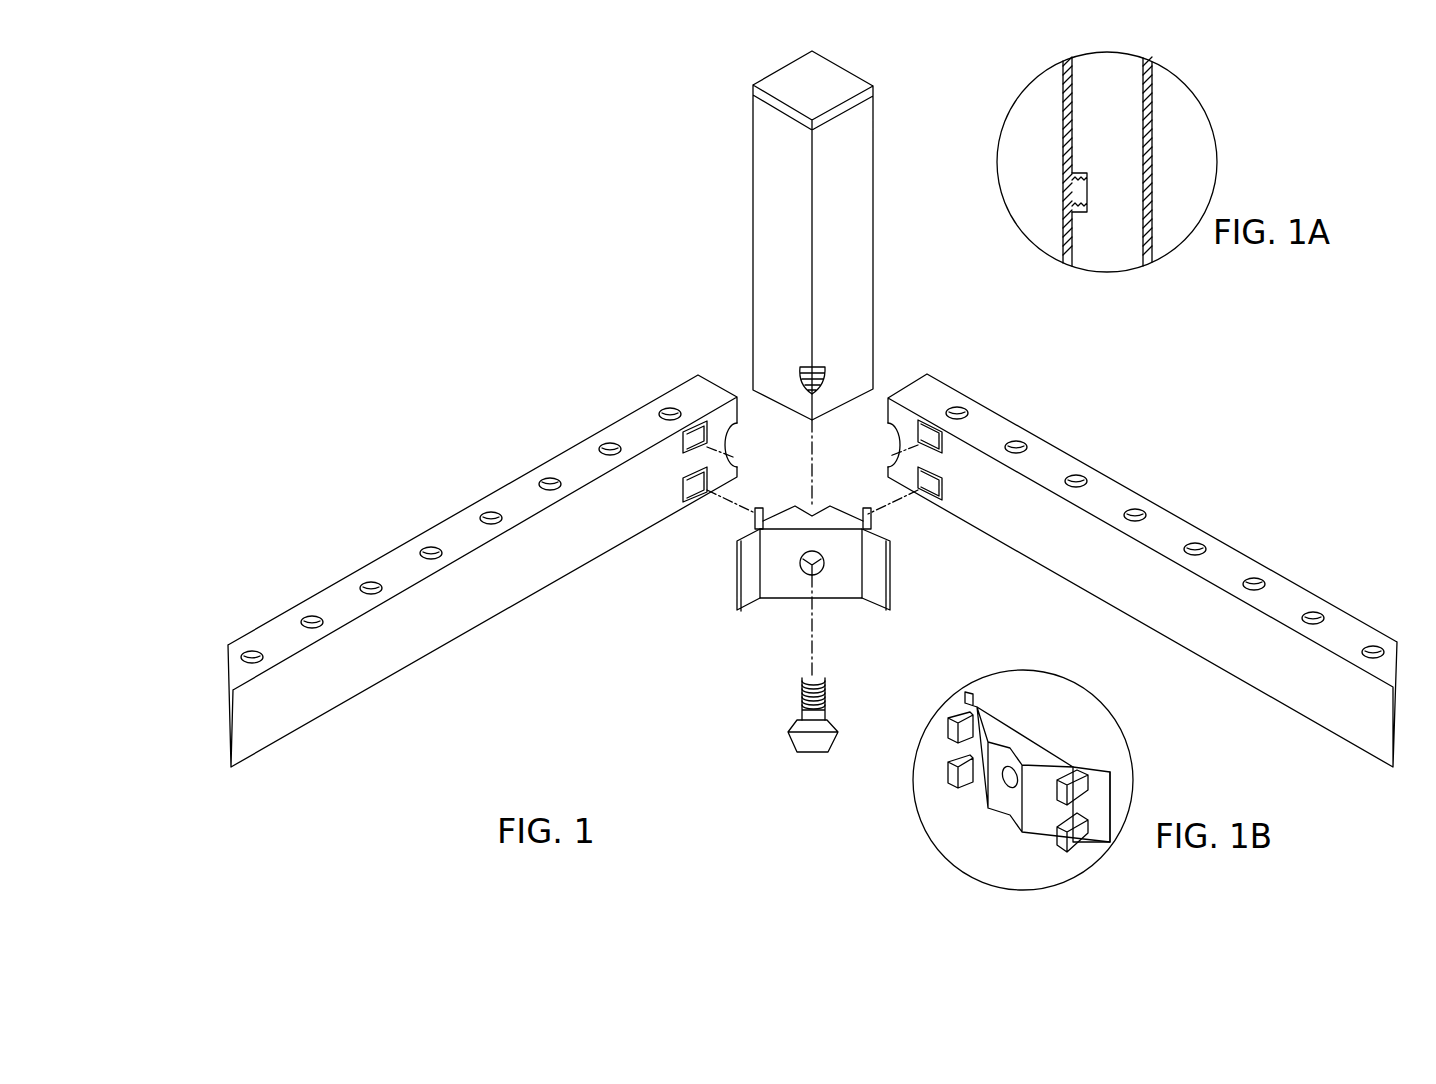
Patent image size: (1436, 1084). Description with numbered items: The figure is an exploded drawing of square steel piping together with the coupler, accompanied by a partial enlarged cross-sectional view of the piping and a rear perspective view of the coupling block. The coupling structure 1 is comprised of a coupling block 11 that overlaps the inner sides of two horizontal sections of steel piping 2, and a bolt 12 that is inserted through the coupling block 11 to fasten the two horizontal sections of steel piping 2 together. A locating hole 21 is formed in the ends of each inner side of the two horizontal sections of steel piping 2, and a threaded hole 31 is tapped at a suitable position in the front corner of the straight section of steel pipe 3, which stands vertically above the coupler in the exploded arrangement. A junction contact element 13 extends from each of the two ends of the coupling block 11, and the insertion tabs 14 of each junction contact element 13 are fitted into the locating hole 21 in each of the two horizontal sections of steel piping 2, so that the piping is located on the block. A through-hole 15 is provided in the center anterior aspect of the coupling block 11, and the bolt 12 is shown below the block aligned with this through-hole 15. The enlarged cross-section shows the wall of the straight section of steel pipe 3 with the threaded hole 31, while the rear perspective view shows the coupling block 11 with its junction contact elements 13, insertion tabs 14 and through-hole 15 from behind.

In FIG. 1, the coupling structure 1 is at (740, 695).
In FIG. 1, the horizontal sections of steel piping 2 is at (458, 528).
In FIG. 1, the straight section of steel pipe 3 is at (779, 223).
In FIG. 1A, the straight section of steel pipe 3 is at (1127, 142).
In FIG. 1, the coupling block 11 is at (783, 587).
In FIG. 1B, the coupling block 11 is at (1027, 762).
In FIG. 1, the bolt 12 is at (808, 740).
In FIG. 1, the junction contact element 13 is at (753, 565).
In FIG. 1B, the junction contact element 13 is at (1103, 797).
In FIG. 1B, the insertion tabs 14 is at (953, 728).
In FIG. 1, the through-hole 15 is at (805, 570).
In FIG. 1B, the through-hole 15 is at (1017, 783).
In FIG. 1, the locating hole 21 is at (700, 437).
In FIG. 1, the threaded hole 31 is at (800, 372).
In FIG. 1A, the threaded hole 31 is at (1077, 214).